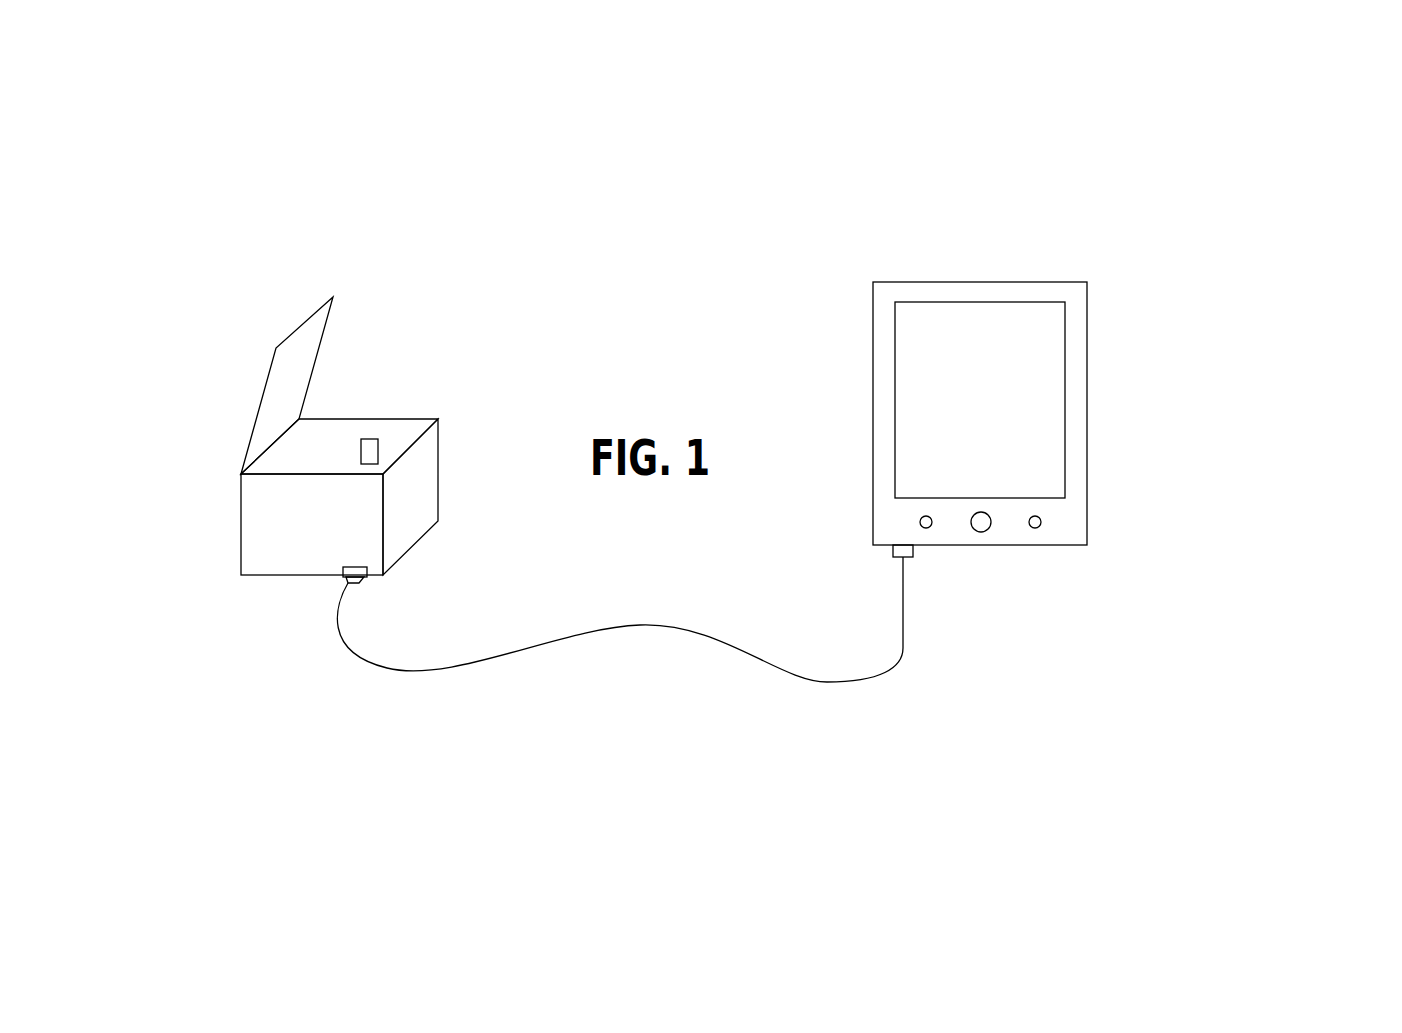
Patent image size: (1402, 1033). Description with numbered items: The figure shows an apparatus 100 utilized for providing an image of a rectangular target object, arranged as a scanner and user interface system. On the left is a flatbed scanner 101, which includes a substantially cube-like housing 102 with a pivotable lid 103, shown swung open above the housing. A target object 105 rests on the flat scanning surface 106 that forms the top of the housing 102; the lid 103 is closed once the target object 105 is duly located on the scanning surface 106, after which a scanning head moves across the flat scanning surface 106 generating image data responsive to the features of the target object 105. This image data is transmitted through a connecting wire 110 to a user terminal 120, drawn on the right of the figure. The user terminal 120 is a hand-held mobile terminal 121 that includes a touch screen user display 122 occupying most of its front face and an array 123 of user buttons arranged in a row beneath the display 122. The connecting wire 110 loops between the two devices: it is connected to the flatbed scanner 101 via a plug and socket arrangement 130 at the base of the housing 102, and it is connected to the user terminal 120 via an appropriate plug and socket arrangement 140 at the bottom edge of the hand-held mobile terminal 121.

The apparatus 100 is at (506, 236).
The flatbed scanner 101 is at (220, 409).
The housing 102 is at (290, 563).
The pivotable lid 103 is at (312, 343).
The target object 105 is at (370, 437).
The flat scanning surface 106 is at (290, 463).
The connecting wire 110 is at (587, 628).
The user terminal 120 is at (1118, 404).
The hand-held mobile terminal 121 is at (1043, 282).
The touch screen user display 122 is at (927, 402).
The array of user buttons 123 is at (1070, 519).
The plug and socket arrangement 130 is at (380, 587).
The plug and socket arrangement 140 is at (930, 571).